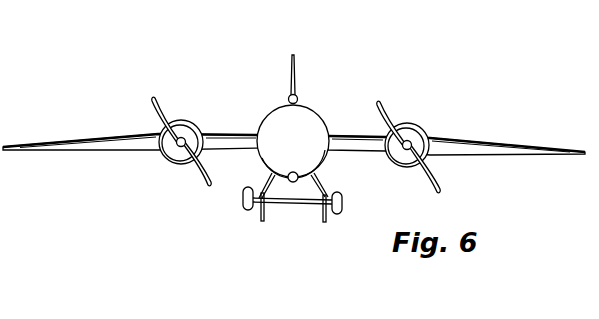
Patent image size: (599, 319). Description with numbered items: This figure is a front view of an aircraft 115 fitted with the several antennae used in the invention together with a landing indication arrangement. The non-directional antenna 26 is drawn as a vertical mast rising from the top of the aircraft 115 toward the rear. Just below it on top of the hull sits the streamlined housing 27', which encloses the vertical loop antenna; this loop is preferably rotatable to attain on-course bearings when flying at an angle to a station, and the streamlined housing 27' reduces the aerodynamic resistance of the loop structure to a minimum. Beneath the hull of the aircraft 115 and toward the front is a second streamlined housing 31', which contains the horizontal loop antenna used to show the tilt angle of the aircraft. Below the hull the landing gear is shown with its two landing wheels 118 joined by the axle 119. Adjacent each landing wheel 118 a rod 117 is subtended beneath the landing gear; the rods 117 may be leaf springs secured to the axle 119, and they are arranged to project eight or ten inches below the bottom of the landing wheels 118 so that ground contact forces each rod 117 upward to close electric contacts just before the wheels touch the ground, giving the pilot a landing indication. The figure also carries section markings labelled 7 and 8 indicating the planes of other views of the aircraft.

The non-directional antenna 26 is at (296, 77).
The streamlined housing 27' is at (313, 92).
The aircraft 115 is at (319, 117).
The streamlined housing 31' is at (325, 172).
The section line 7 is at (306, 152).
The section line 8 is at (260, 190).
The rod 117 is at (261, 217).
The landing wheel 118 is at (243, 201).
The axle 119 is at (291, 205).